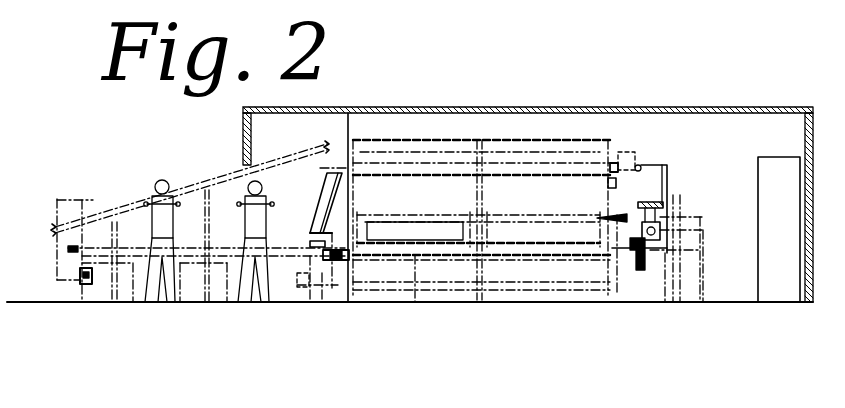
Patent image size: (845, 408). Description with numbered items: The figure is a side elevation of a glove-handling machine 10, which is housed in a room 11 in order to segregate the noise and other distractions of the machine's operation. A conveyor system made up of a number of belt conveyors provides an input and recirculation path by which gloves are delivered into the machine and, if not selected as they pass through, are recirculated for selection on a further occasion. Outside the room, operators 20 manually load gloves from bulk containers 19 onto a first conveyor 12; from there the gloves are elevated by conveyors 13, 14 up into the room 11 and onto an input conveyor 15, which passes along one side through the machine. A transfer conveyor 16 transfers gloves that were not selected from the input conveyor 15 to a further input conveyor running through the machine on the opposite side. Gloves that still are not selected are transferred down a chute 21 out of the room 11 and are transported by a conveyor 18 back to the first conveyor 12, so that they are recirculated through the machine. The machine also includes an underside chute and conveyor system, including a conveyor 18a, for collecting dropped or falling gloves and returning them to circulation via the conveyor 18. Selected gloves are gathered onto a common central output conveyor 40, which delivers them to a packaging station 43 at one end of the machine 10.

The machine 10 is at (697, 148).
The room 11 is at (718, 108).
The first conveyor 12 is at (280, 242).
The conveyor 13 is at (65, 267).
The conveyor 14 is at (128, 203).
The input conveyor 15 is at (437, 168).
The transfer conveyor 16 is at (625, 163).
The conveyor 18 is at (322, 273).
The conveyor 18a is at (415, 255).
The bulk containers 19 is at (103, 292).
The operators 20 is at (245, 200).
The chute 21 is at (331, 197).
The output conveyor 40 is at (560, 213).
The packaging station 43 is at (690, 207).